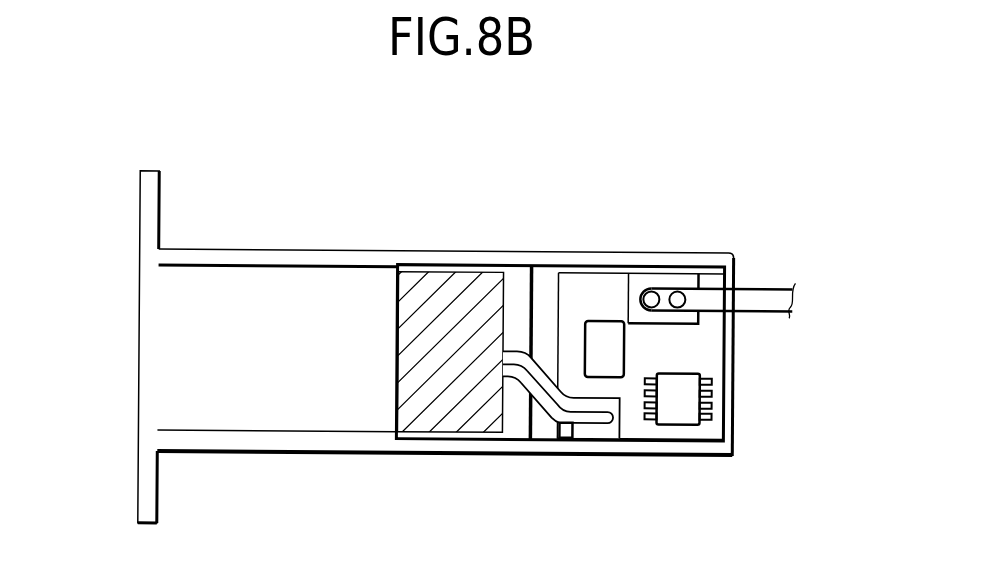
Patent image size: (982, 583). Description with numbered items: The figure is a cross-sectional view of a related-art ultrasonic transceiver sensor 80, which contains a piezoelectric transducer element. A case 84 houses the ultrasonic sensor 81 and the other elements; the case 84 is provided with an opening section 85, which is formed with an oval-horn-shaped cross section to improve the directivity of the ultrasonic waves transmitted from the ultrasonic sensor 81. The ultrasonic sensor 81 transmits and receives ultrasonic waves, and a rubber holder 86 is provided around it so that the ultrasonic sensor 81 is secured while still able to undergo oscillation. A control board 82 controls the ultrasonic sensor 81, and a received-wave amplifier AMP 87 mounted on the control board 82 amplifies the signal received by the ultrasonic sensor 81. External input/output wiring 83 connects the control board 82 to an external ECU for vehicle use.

The ultrasonic transceiver sensor 80 is at (734, 226).
The ultrasonic sensor 81 is at (458, 272).
The control board 82 is at (567, 440).
The external input/output wiring 83 is at (775, 300).
The case 84 is at (276, 255).
The opening section 85 is at (167, 302).
The rubber holder 86 is at (452, 440).
The received-wave amplifier AMP 87 is at (677, 405).